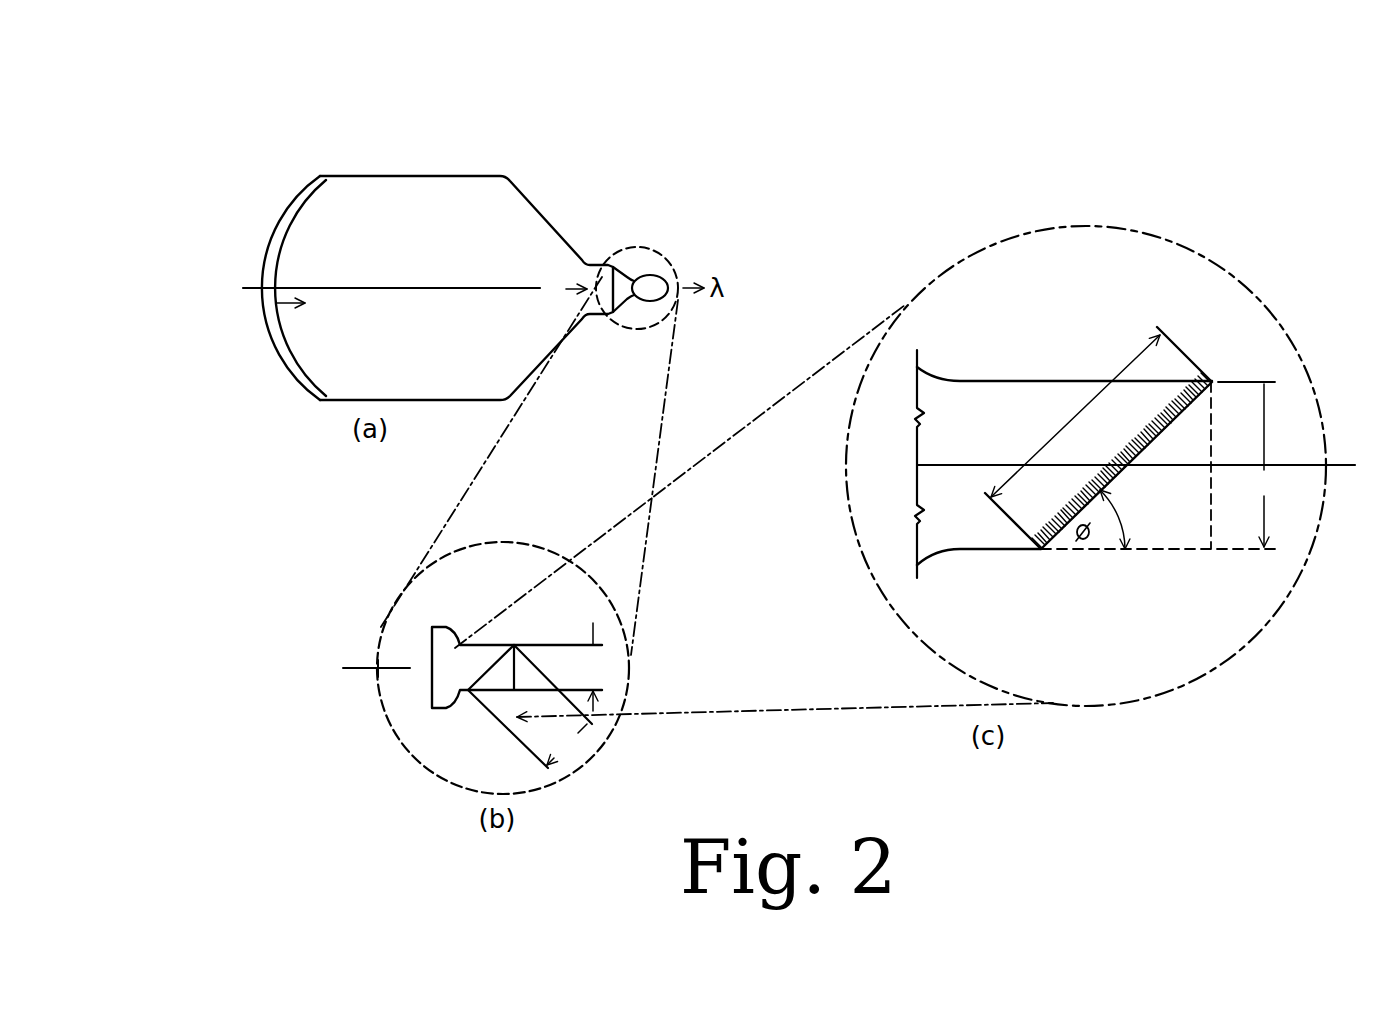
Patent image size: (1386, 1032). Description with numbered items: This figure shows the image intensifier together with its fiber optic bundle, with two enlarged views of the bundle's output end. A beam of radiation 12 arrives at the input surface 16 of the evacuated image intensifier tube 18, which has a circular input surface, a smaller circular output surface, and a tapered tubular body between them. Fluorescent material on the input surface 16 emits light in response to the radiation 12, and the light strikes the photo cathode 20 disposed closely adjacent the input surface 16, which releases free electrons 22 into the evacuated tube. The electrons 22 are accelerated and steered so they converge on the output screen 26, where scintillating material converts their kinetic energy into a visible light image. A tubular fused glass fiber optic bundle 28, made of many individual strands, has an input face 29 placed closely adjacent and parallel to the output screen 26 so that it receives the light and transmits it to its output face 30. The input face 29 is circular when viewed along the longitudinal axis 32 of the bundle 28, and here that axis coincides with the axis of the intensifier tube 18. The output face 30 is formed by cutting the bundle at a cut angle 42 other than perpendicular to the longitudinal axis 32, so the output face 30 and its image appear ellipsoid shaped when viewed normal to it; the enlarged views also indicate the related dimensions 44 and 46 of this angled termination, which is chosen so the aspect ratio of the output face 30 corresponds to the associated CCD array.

The beam of radiation 12 is at (256, 248).
The input surface 16 is at (295, 196).
The image intensifier tube 18 is at (427, 162).
The photo cathode 20 is at (293, 213).
The free electrons 22 is at (335, 311).
The output screen 26 is at (607, 280).
The fiber optic bundle 28 is at (653, 263).
The input face 29 is at (427, 647).
The output face 30 is at (652, 290).
The longitudinal axis 32 is at (483, 288).
The cut angle 42 is at (1114, 521).
The nozzle height 44 is at (930, 546).
The mirror length 46 is at (853, 550).